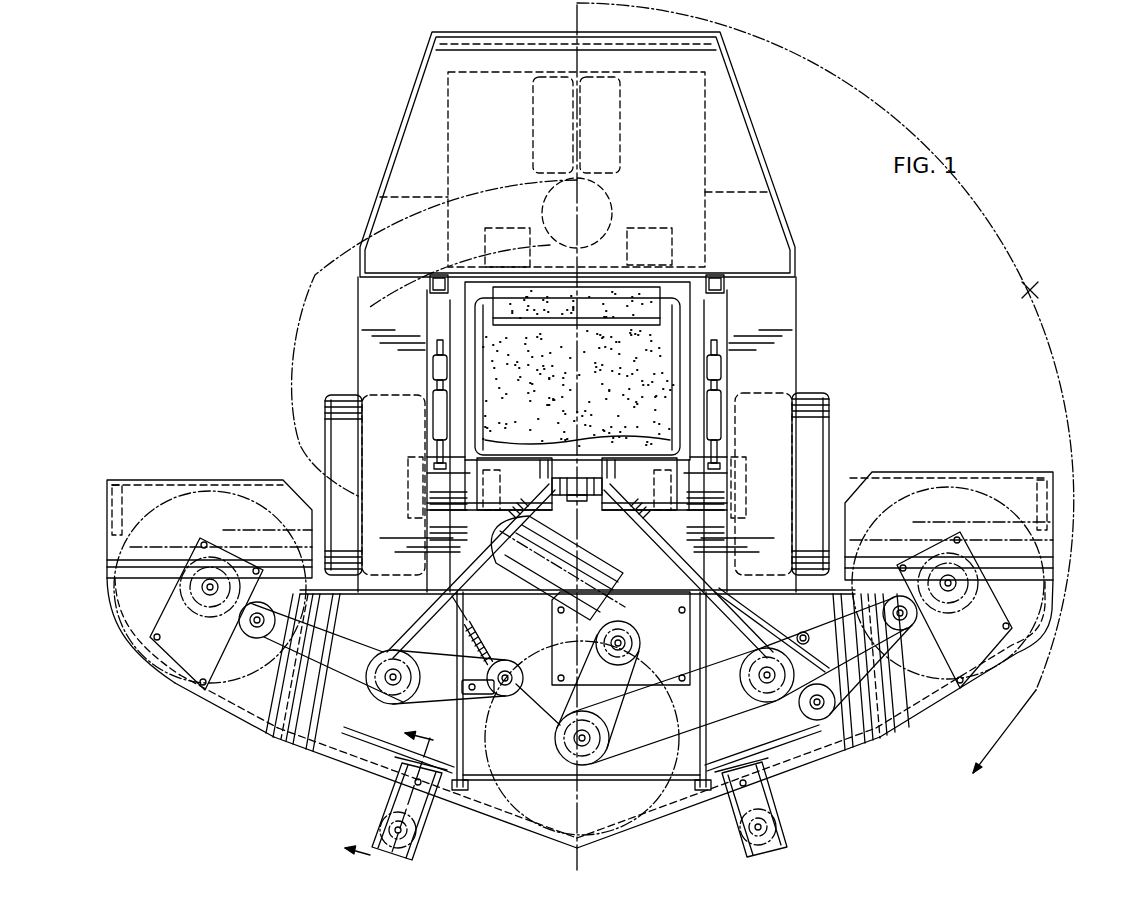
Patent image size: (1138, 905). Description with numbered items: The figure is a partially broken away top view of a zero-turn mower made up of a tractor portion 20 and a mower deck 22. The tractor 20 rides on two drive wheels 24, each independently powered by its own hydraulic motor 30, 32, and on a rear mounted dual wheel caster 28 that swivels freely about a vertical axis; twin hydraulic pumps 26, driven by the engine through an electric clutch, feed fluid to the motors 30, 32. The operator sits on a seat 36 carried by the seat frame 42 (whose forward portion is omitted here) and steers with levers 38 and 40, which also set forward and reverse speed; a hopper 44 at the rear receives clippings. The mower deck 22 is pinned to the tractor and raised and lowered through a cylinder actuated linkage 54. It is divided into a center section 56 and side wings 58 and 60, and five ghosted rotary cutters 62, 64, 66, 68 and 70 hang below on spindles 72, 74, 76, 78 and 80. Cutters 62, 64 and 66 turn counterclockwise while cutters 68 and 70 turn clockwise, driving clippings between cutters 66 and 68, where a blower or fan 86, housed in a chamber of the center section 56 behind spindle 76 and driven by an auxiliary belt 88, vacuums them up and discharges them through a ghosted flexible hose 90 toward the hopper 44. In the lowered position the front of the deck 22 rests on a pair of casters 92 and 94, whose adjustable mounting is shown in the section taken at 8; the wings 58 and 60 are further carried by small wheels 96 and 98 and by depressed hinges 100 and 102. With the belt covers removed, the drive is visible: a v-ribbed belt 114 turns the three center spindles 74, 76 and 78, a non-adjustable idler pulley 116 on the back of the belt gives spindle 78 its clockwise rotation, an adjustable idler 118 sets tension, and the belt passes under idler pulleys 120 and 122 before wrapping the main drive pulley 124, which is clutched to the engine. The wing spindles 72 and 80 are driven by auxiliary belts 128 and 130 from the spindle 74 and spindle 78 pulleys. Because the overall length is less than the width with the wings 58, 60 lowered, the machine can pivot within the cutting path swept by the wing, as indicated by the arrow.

The section line 8- 8 is at (378, 785).
The tractor portion 20 is at (814, 289).
The mower deck 22 is at (867, 773).
The drive wheels 24 is at (340, 400).
The twin hydraulic pumps 26 is at (502, 227).
The rear mounted dual wheel caster 28 is at (607, 140).
The hydraulic motor 30 is at (687, 482).
The hydraulic motor 32 is at (480, 483).
The seat 36 is at (625, 350).
The lever 38 is at (693, 477).
The lever 40 is at (440, 462).
The seat frame 42 is at (683, 332).
The hopper 44 is at (762, 152).
The linkage 54 is at (465, 728).
The center section 56 is at (507, 810).
The side wing 58 is at (243, 705).
The side wing 60 is at (1010, 650).
The rotary cutter 62 is at (112, 592).
The rotary cutter 64 is at (340, 758).
The rotary cutter 66 is at (653, 807).
The rotary cutter 68 is at (836, 750).
The rotary cutter 70 is at (1037, 547).
The spindle 72 is at (209, 595).
The spindle 74 is at (390, 692).
The spindle 76 is at (582, 766).
The spindle 78 is at (763, 686).
The spindle 80 is at (949, 590).
The blower or fan 86 is at (637, 618).
The auxiliary belt 88 is at (610, 735).
The flexible hose 90 is at (583, 563).
The caster 92 is at (382, 822).
The caster 94 is at (779, 815).
The small wheel 96 is at (132, 513).
The small wheel 98 is at (1053, 500).
The depressed hinge 100 is at (287, 733).
The depressed hinge 102 is at (882, 752).
The v-ribbed belt 114 is at (740, 612).
The non-adjustable idler pulley 116 is at (805, 715).
The adjustable idler 118 is at (508, 660).
The idler pulley 120 is at (556, 496).
The idler pulley 122 is at (627, 510).
The main drive pulley 124 is at (590, 503).
The auxiliary belt 128 is at (376, 648).
The auxiliary belt 130 is at (812, 627).